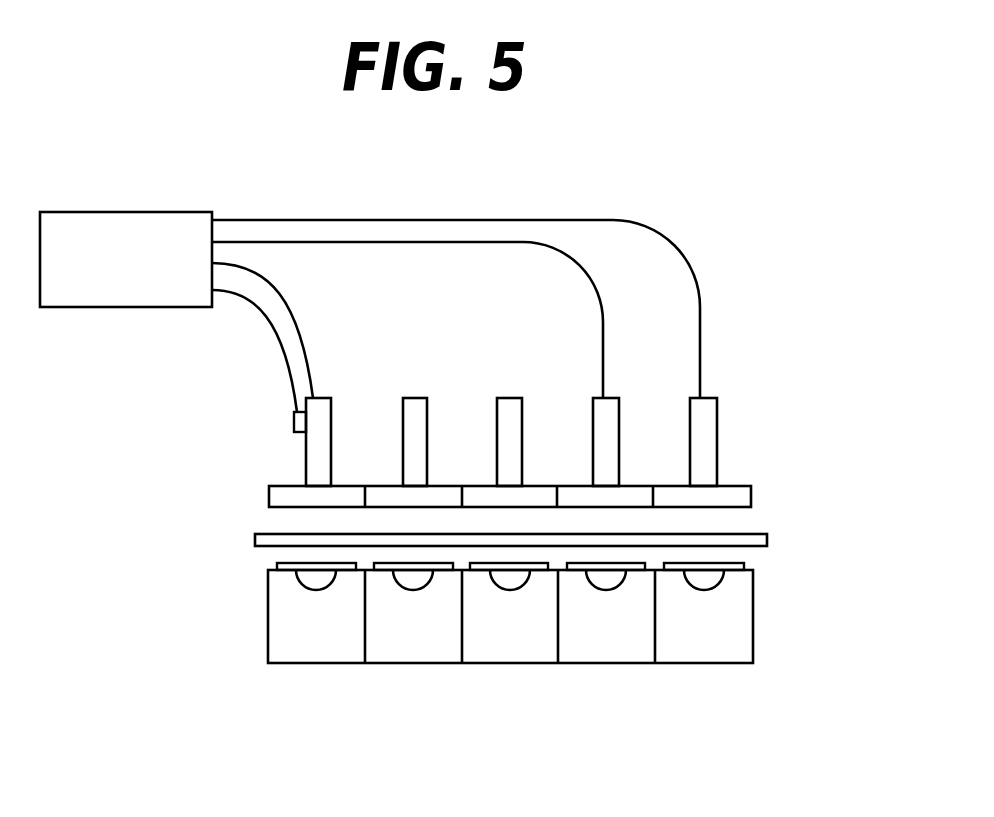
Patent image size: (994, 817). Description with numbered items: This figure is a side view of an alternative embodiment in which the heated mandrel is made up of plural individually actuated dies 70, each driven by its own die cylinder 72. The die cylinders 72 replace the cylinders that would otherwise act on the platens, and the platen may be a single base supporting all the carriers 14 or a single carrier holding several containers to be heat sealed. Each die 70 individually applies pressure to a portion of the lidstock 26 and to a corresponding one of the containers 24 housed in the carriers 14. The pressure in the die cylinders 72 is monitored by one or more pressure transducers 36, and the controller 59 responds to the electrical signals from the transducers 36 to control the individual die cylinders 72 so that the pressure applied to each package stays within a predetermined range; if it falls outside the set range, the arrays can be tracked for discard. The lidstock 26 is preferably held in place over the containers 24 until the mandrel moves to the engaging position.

The carrier 14 is at (480, 663).
The container 24 is at (272, 562).
The lidstock 26 is at (767, 538).
The pressure transducer 36 is at (293, 418).
The controller 59 is at (121, 212).
The individually actuated die 70 is at (388, 486).
The die cylinder 72 is at (508, 398).